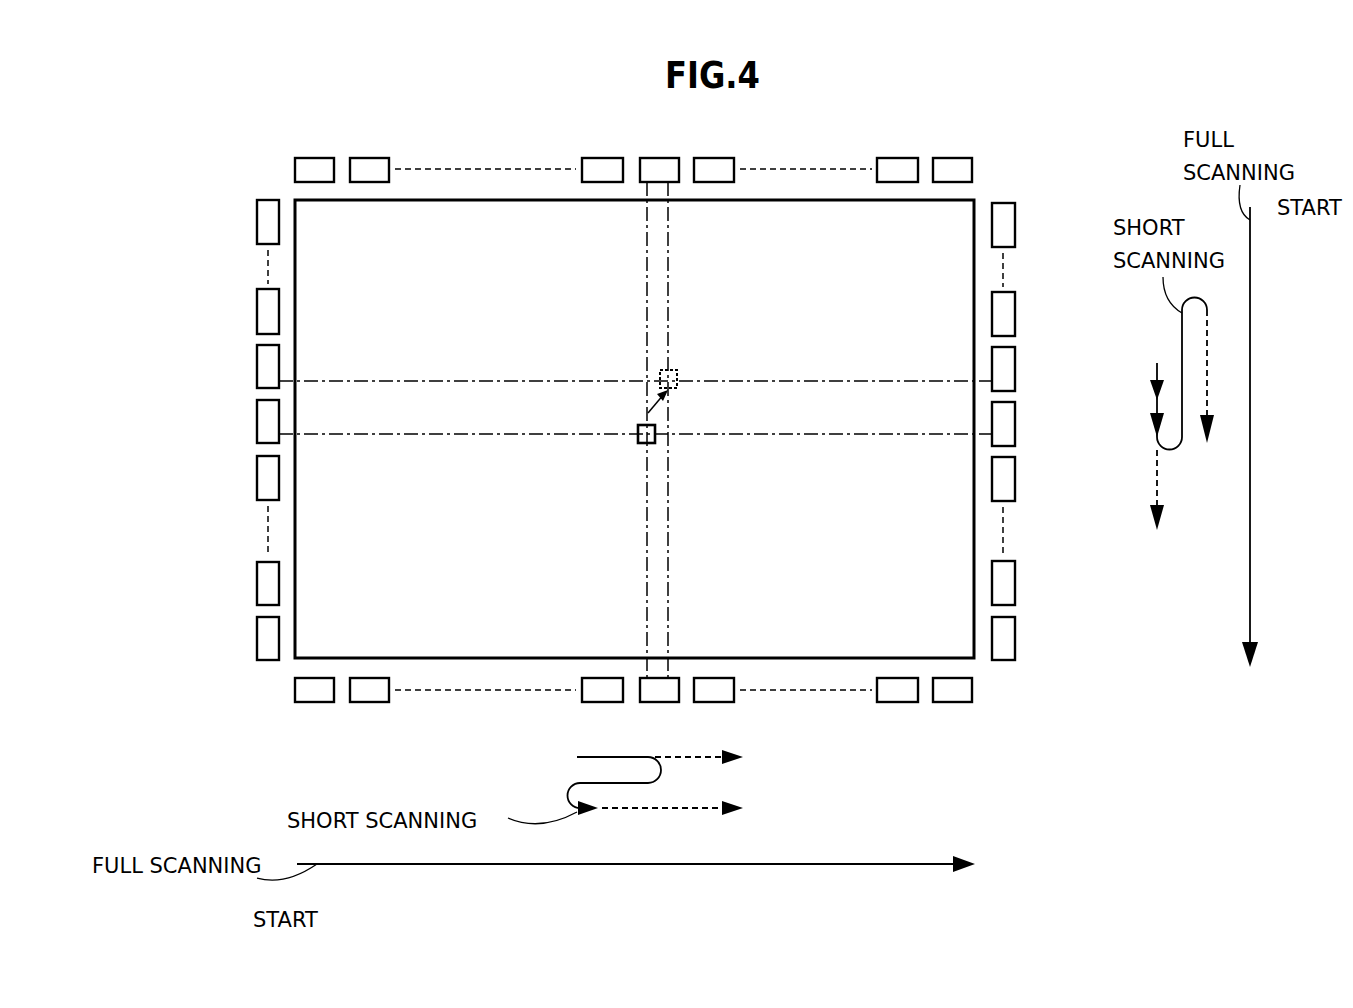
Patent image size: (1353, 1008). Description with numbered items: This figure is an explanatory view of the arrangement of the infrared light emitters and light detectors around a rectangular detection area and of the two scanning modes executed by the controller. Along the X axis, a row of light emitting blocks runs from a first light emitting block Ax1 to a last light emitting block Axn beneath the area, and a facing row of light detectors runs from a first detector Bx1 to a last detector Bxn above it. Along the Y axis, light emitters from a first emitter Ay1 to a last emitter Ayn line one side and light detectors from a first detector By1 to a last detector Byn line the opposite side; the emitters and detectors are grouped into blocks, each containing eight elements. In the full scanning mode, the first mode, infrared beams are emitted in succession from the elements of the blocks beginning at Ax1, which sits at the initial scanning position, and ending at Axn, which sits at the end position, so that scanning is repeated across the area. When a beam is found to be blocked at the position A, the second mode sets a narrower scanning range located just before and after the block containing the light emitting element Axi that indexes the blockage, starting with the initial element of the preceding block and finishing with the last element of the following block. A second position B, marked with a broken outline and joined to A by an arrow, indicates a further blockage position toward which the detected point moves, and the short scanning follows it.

The first light detector in X direction Bx1 is at (308, 167).
The last light detector in X direction Bxn is at (953, 168).
The first light detector in Y direction By1 is at (261, 225).
The last light detector in Y direction Byn is at (258, 645).
The first light emitter in Y direction Ay1 is at (1015, 217).
The last light emitter in Y direction Ayn is at (1015, 647).
The first light emitting block Ax1 is at (318, 697).
The light emitting element indexing blockage position Axi is at (655, 701).
The last light emitting block Axn is at (955, 703).
The beam-blocked position A is at (631, 451).
The detected position B is at (688, 366).